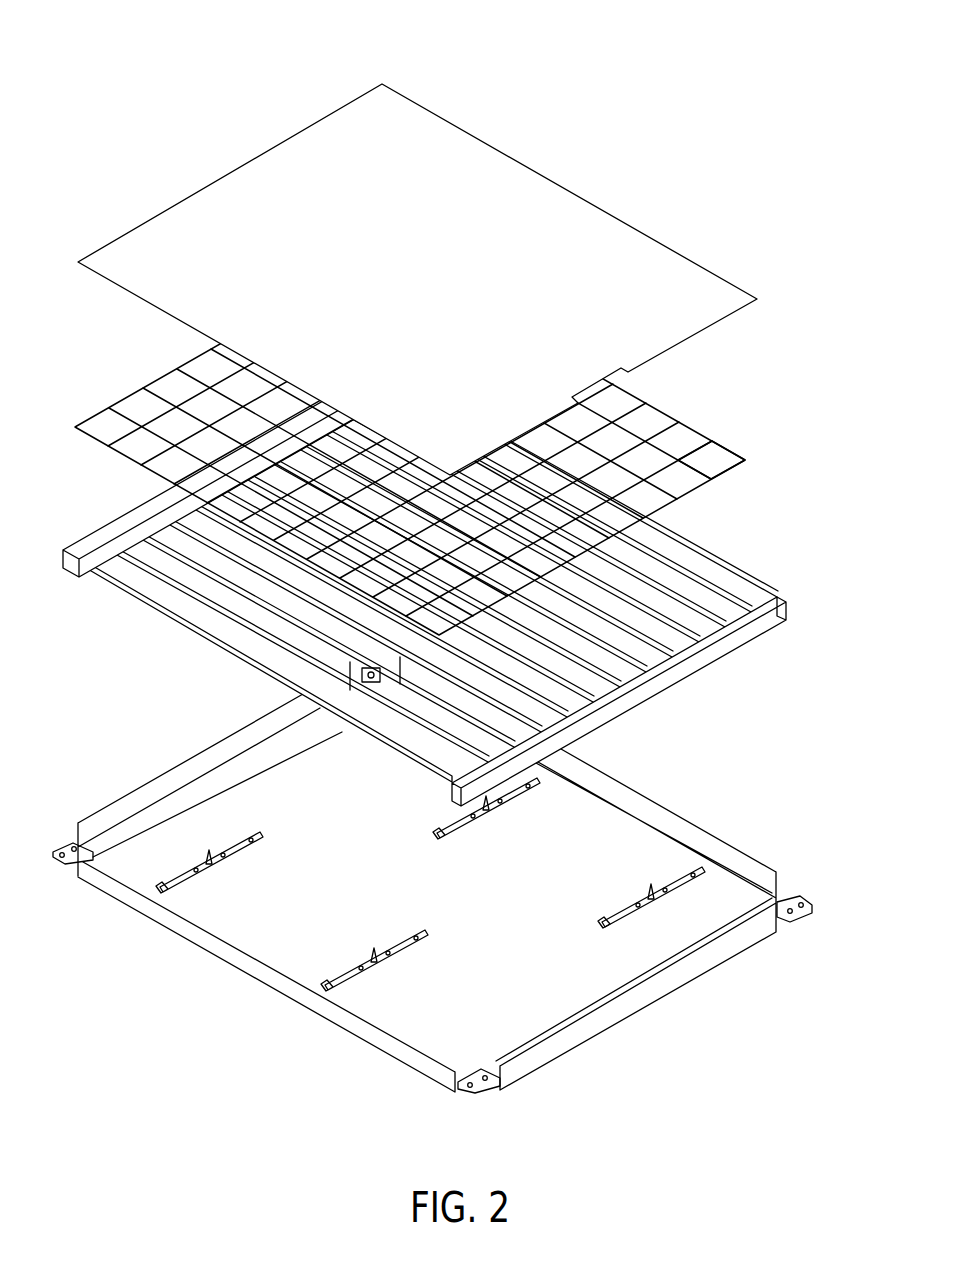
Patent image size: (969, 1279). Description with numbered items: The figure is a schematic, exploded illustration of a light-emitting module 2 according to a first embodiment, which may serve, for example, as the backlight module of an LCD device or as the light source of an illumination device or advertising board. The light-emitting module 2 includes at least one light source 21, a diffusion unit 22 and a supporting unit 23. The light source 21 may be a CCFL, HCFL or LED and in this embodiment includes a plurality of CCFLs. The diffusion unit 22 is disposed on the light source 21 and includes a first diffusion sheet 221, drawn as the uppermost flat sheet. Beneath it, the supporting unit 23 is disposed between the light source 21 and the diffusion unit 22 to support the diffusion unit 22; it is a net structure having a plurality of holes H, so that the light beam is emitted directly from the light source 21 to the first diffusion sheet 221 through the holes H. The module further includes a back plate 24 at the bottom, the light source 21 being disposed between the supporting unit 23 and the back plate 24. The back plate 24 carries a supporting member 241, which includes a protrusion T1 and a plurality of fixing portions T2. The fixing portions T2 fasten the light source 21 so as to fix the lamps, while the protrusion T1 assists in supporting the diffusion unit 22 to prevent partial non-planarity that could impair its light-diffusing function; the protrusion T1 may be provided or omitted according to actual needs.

The light-emitting module 2 is at (46, 41).
The light source 21 is at (730, 587).
The diffusion unit 22 is at (455, 279).
The first diffusion sheet 221 is at (735, 297).
The supporting unit 23 is at (432, 443).
The holes H is at (718, 460).
The back plate 24 is at (432, 893).
The supporting member 241 is at (453, 884).
The protrusion T1 is at (647, 890).
The fixing portions T2 is at (610, 918).